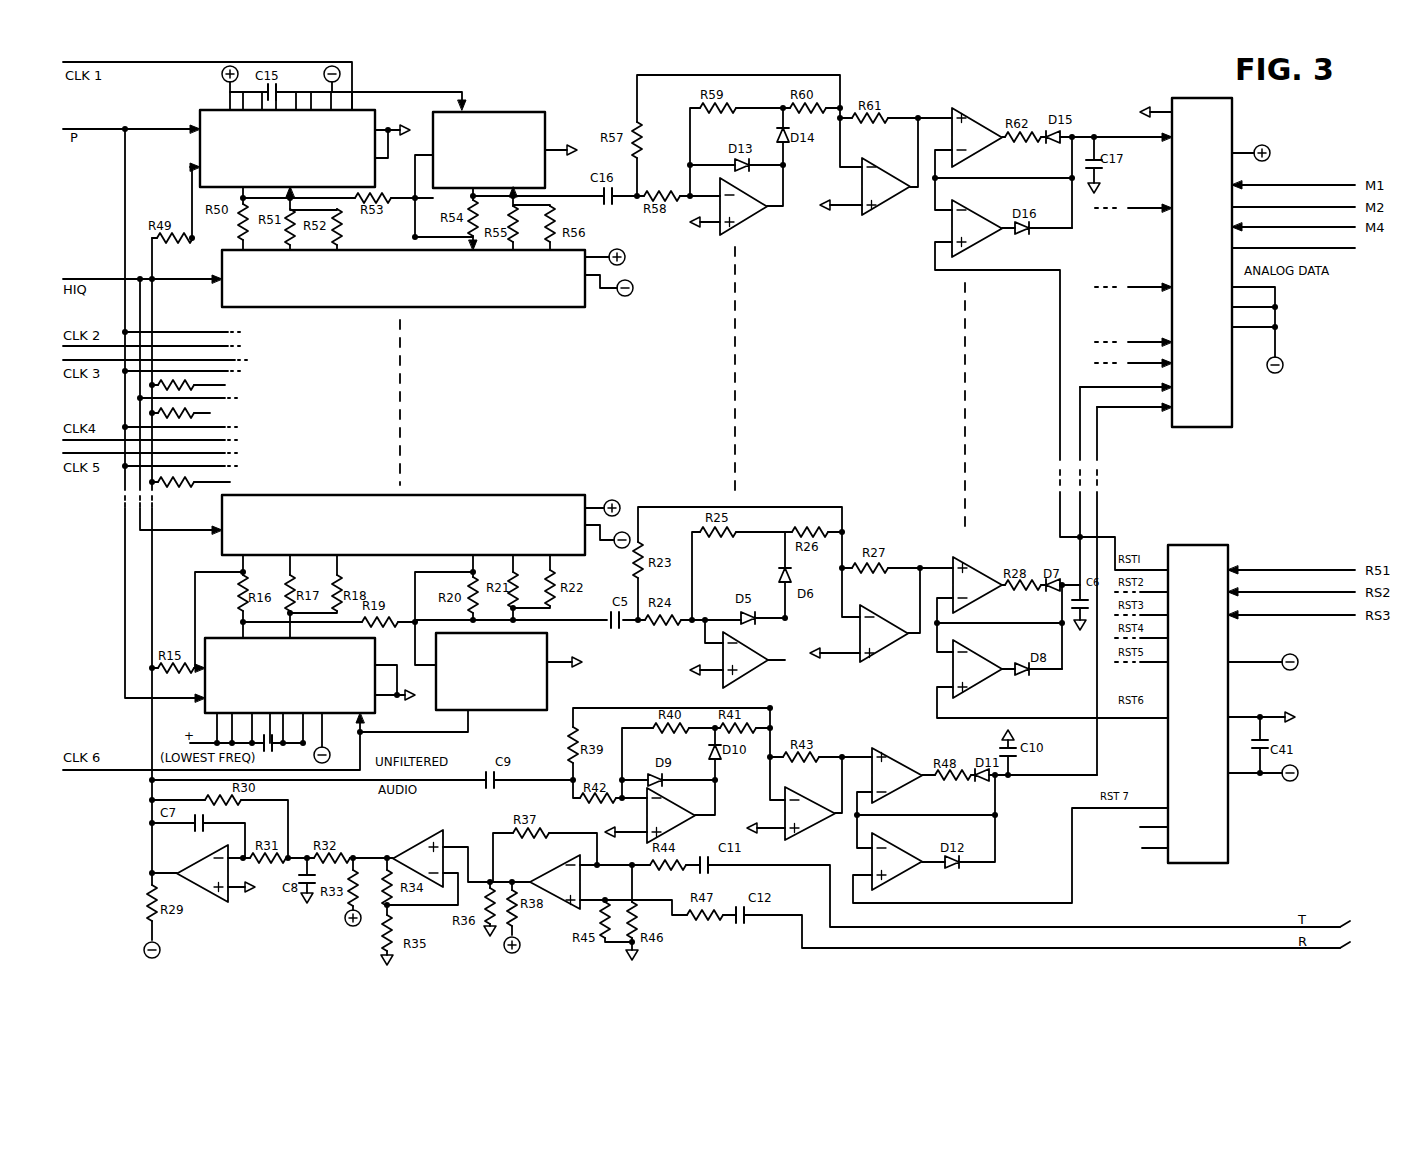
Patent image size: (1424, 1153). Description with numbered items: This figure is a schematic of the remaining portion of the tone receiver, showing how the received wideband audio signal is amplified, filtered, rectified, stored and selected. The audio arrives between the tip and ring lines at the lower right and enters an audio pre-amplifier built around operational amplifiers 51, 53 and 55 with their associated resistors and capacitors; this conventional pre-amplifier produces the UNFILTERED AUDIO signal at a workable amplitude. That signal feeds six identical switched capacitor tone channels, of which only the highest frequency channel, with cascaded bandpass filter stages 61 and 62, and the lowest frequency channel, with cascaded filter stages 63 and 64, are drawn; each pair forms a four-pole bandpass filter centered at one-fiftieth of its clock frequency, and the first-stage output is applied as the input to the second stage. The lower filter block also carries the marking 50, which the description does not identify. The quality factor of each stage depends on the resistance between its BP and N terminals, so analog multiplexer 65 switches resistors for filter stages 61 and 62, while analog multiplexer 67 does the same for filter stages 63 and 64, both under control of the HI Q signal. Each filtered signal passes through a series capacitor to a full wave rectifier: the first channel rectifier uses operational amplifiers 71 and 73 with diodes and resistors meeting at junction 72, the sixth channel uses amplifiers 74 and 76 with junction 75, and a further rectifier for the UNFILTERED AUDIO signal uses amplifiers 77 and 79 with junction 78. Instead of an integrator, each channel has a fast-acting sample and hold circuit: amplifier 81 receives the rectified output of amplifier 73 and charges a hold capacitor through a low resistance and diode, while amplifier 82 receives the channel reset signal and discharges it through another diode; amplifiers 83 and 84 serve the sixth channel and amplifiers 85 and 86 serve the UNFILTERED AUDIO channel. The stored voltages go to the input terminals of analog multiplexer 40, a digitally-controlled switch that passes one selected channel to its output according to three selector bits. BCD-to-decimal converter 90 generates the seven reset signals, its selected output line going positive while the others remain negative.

The analog multiplexer 40 is at (1229, 407).
The switched capacitor filter 50 is at (190, 717).
The operational amplifier 51 is at (553, 866).
The operational amplifier 53 is at (422, 835).
The operational amplifier 55 is at (210, 901).
The filter stage 61 is at (203, 109).
The filter stage 62 is at (526, 112).
The filter stage 63 is at (270, 682).
The filter stage 64 is at (562, 692).
The analog multiplexer 65 is at (530, 308).
The analog multiplexer 67 is at (530, 494).
The operational amplifier 71 is at (740, 233).
The junction 72 is at (844, 114).
The operational amplifier 73 is at (883, 213).
The operational amplifier 74 is at (756, 676).
The junction 75 is at (842, 532).
The operational amplifier 76 is at (892, 661).
The operational amplifier 77 is at (668, 807).
The junction 78 is at (771, 710).
The operational amplifier 79 is at (816, 828).
The operational amplifier 81 is at (978, 114).
The operational amplifier 82 is at (988, 246).
The operational amplifier 83 is at (965, 560).
The operational amplifier 84 is at (984, 698).
The operational amplifier 85 is at (887, 754).
The operational amplifier 86 is at (906, 878).
The BCD-to-decimal converter 90 is at (1233, 826).